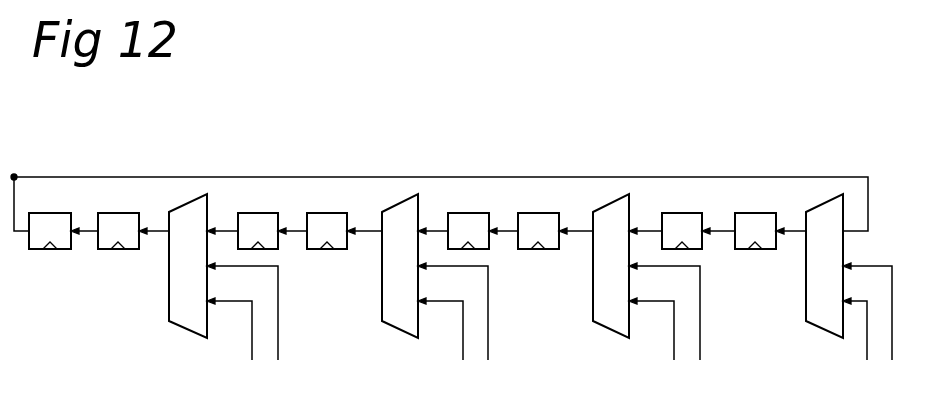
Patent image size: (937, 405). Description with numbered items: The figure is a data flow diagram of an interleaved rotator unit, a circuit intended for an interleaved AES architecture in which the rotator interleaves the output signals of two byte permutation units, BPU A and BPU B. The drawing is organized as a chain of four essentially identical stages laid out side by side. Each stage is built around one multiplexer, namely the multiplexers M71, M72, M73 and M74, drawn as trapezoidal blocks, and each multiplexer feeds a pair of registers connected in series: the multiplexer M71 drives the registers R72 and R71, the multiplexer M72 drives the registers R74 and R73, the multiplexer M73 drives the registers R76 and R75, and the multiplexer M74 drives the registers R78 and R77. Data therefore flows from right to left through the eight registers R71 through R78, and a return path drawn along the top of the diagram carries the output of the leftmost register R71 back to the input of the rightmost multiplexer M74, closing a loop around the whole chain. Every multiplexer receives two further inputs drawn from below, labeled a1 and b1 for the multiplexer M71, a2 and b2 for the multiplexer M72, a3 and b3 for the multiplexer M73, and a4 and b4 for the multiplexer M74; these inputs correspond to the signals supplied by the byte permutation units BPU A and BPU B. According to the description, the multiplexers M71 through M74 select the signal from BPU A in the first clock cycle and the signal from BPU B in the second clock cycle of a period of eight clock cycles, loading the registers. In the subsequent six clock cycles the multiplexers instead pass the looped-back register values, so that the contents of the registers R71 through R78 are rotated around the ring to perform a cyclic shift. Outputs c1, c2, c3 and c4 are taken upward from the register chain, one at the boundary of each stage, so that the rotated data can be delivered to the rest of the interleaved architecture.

The register R71 is at (50, 231).
The register R72 is at (118, 231).
The register R73 is at (258, 231).
The register R74 is at (327, 231).
The register R75 is at (468, 231).
The register R76 is at (538, 231).
The register R77 is at (682, 231).
The register R78 is at (755, 231).
The multiplexer M71 is at (188, 266).
The multiplexer M72 is at (400, 266).
The multiplexer M73 is at (611, 266).
The multiplexer M74 is at (824, 266).
The control/output signal c1 is at (14, 177).
The control/output signal c2 is at (224, 231).
The control/output signal c3 is at (435, 231).
The control/output signal c4 is at (647, 231).
The input signal a1 is at (234, 345).
The input signal b1 is at (247, 328).
The input signal a2 is at (445, 345).
The input signal b2 is at (458, 328).
The input signal a3 is at (656, 345).
The input signal b3 is at (669, 328).
The input signal a4 is at (859, 345).
The input signal b4 is at (871, 328).